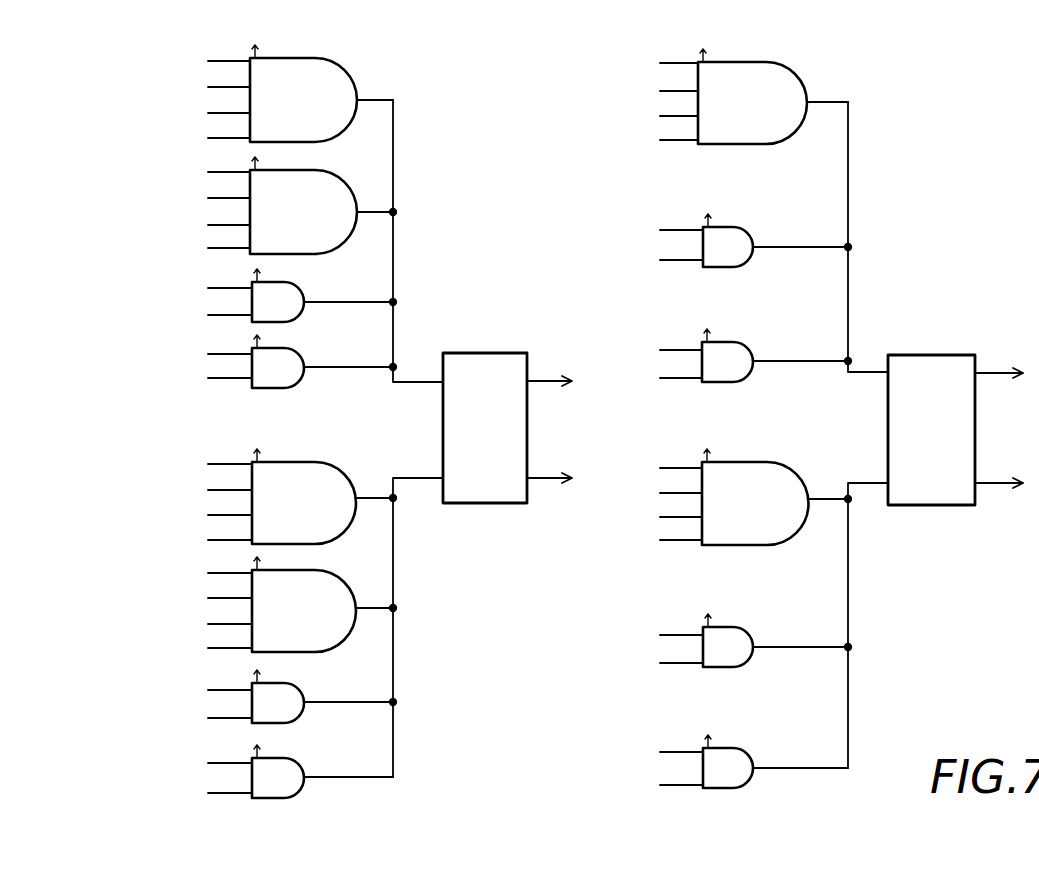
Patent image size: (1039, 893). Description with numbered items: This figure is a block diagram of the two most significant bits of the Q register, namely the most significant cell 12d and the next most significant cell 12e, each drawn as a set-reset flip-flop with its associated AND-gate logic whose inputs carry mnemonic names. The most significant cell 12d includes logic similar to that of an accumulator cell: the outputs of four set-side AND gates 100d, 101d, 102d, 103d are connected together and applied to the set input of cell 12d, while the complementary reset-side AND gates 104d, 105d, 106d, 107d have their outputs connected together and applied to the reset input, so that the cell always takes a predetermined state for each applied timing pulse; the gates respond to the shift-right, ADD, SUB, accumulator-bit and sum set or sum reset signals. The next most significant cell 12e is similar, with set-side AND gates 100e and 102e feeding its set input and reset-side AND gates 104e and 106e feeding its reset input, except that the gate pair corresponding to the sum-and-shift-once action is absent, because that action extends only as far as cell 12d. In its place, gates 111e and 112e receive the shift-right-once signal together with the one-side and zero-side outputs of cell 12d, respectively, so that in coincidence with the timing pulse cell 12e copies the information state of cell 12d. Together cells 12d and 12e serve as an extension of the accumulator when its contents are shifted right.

The AND gate (SHR 2, ADD*, SUB*, A(n-1)) 100d is at (320, 56).
The AND gate (SHR 1, ADD*, SUB*, A(n)) 101d is at (318, 167).
The AND gate (SHR 2, SUM SET (n-1)) 102d is at (297, 282).
The AND gate (SHR 1, SUM SET (n)) 103d is at (297, 341).
The most significant cell of the Q register 12d is at (488, 352).
The AND gate (SHR 2, ADD*, SUB*, A(n-1)) reset 104d is at (327, 458).
The AND gate (SHR 1, ADD*, SUB*, A(n)) reset 105d is at (327, 566).
The AND gate (SHR 2, SUM RESET (n-1)) 106d is at (292, 682).
The AND gate (SHR 1, SUM RESET (n)) 107d is at (292, 757).
The AND gate (SHR 2, ADD*, SUB*, A(n)) 100e is at (773, 58).
The AND gate (SHR 2, SUM SET (n)) 102e is at (745, 227).
The gate 111e is at (742, 341).
The next most significant cell of the Q register 12e is at (945, 354).
The AND gate (SHR 2, ADD*, SUB*, A(n)*) 104e is at (785, 460).
The AND gate (SHR 2, SUM RESET (n)) 106e is at (742, 625).
The gate 112e is at (740, 745).